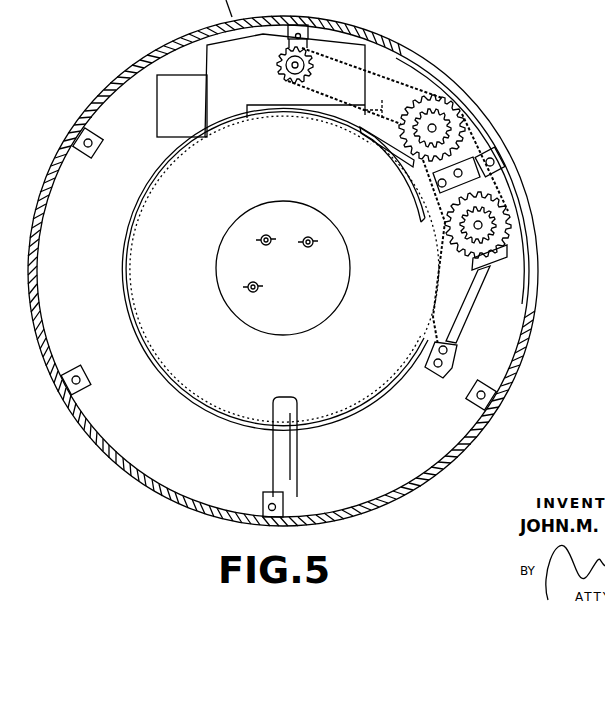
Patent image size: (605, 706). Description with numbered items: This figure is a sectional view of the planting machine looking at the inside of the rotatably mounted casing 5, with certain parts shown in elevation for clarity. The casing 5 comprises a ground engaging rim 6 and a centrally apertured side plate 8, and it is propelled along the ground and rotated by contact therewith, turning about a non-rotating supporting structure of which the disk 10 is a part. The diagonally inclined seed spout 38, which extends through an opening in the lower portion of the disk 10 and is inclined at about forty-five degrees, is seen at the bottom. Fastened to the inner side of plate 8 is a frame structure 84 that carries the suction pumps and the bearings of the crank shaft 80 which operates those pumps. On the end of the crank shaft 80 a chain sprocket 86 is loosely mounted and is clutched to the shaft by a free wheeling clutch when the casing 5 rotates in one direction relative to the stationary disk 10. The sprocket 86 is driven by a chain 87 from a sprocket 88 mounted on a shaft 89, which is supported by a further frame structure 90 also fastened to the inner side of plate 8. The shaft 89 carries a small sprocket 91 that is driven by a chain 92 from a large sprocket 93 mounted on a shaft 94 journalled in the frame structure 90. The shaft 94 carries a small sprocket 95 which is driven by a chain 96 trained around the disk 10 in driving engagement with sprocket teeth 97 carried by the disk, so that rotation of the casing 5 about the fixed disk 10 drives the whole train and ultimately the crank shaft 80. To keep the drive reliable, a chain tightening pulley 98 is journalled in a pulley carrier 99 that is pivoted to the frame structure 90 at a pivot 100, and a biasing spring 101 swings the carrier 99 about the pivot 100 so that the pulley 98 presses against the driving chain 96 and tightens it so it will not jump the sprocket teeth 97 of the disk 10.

The casing 5 is at (76, 117).
The ground engaging rim 6 is at (520, 362).
The side plate 8 is at (128, 92).
The disk 10 is at (284, 269).
The seed spout 38 is at (284, 396).
The crank shaft 80 is at (283, 68).
The frame structure 84 is at (282, 93).
The chain sprocket 86 is at (311, 68).
The chain 87 is at (300, 85).
The sprocket 88 is at (410, 87).
The shaft 89 is at (436, 126).
The frame structure 90 is at (493, 124).
The small sprocket 91 is at (415, 160).
The chain 92 is at (500, 155).
The large sprocket 93 is at (505, 217).
The shaft 94 is at (503, 218).
The small sprocket 95 is at (484, 230).
The chain 96 is at (447, 313).
The sprocket teeth 97 is at (437, 255).
The chain tightening pulley 98 is at (437, 195).
The pulley carrier 99 is at (468, 172).
The pivot 100 is at (462, 185).
The biasing spring 101 is at (430, 180).